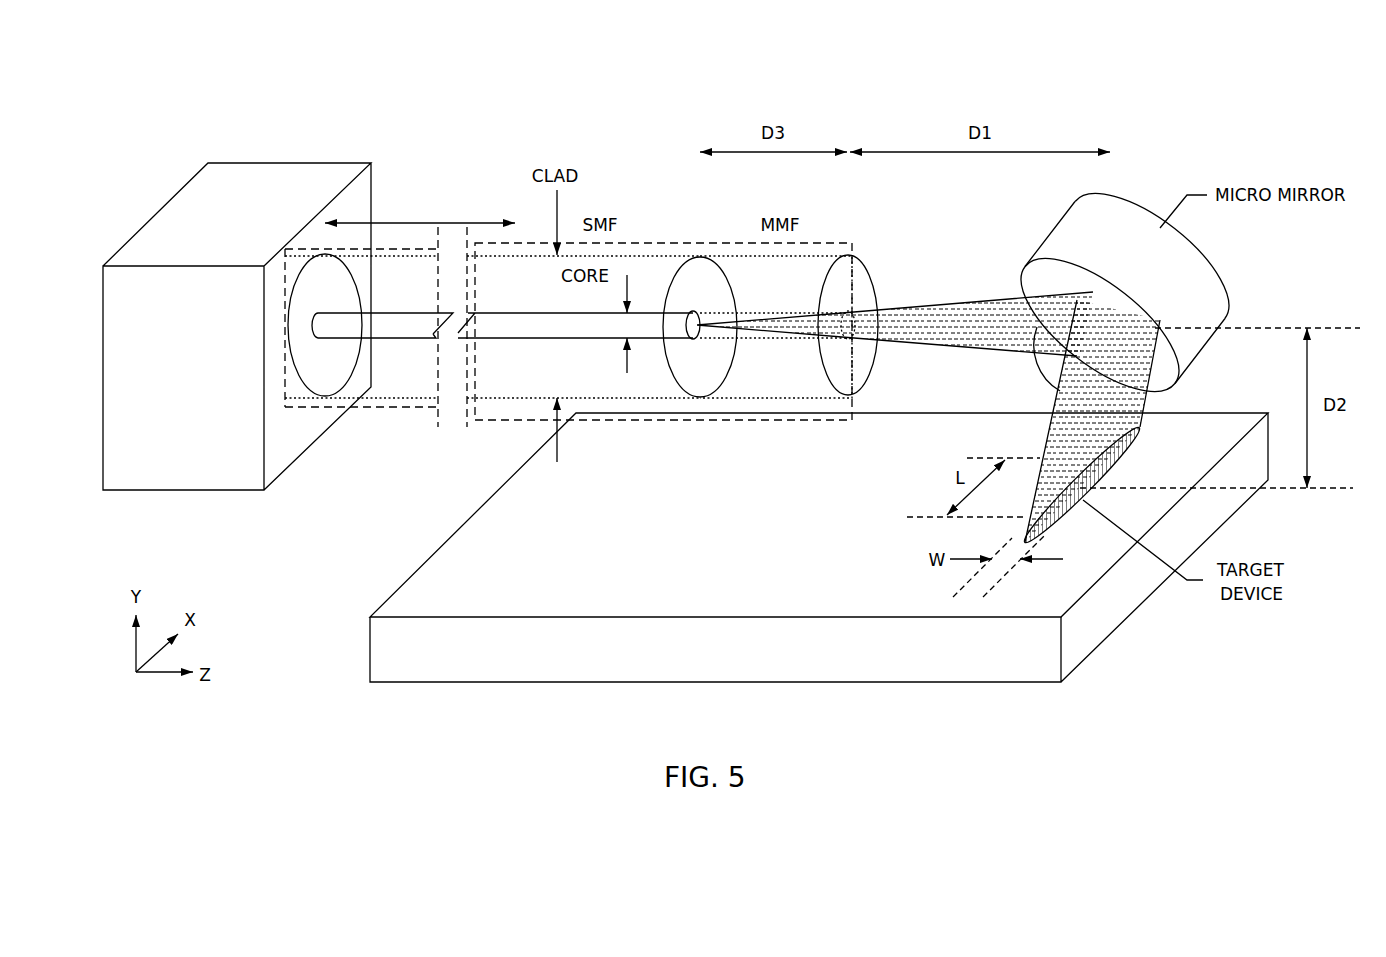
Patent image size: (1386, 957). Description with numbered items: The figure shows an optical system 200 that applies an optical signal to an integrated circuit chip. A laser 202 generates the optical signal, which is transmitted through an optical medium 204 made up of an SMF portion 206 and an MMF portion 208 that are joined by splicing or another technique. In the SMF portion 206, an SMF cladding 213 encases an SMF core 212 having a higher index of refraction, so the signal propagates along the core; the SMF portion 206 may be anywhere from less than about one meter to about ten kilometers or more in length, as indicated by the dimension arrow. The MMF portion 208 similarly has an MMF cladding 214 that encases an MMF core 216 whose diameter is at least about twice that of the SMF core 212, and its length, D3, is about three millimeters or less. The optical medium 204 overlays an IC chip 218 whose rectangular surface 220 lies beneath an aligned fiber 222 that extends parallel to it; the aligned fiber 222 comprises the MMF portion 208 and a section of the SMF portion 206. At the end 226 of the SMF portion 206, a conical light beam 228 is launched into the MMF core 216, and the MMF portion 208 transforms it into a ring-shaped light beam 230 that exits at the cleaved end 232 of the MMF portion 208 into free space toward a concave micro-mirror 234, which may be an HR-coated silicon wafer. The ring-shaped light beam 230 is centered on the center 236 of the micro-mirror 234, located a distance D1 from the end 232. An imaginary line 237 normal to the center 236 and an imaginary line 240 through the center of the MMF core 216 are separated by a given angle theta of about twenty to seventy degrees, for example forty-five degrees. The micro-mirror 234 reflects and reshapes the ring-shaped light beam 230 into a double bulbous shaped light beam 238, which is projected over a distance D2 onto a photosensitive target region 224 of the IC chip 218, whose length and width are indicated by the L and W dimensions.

The optical system 200 is at (130, 90).
The laser 202 is at (103, 376).
The optical medium 204 is at (730, 255).
The SMF portion 206 is at (513, 257).
The MMF portion 208 is at (718, 398).
The SMF core 212 is at (563, 328).
The SMF cladding 213 is at (391, 388).
The MMF cladding 214 is at (834, 400).
The MMF core 216 is at (796, 345).
The IC chip 218 is at (717, 683).
The surface 220 is at (840, 605).
The aligned fiber 222 is at (680, 243).
The target region 224 is at (1085, 497).
The end of the SMF portion 226 is at (685, 372).
The conical light beam 228 is at (762, 322).
The ring-shaped light beam 230 is at (928, 312).
The end of the MMF portion 232 is at (757, 338).
The micro-mirror 234 is at (1200, 262).
The center of the micro-mirror 236 is at (1103, 342).
The imaginary line normal to the center of the micro-mirror 237 is at (1047, 397).
The double bulbous shaped light beam 238 is at (1160, 388).
The imaginary line through the center of the MMF core 240 is at (992, 323).